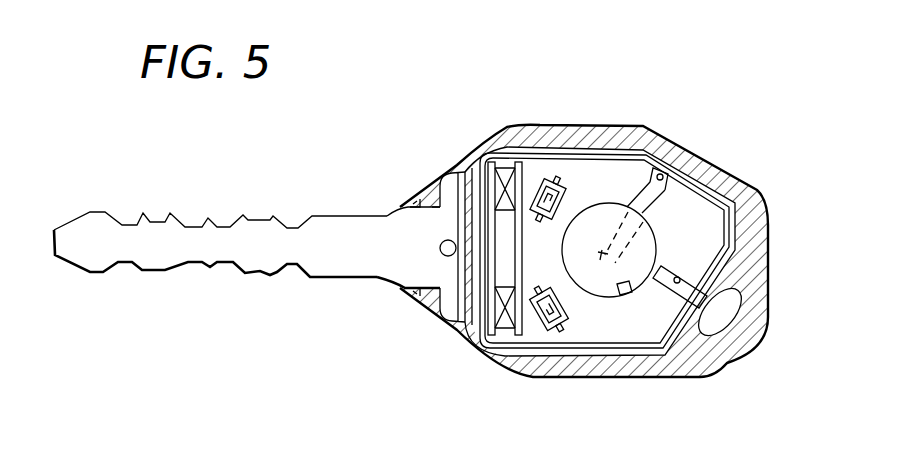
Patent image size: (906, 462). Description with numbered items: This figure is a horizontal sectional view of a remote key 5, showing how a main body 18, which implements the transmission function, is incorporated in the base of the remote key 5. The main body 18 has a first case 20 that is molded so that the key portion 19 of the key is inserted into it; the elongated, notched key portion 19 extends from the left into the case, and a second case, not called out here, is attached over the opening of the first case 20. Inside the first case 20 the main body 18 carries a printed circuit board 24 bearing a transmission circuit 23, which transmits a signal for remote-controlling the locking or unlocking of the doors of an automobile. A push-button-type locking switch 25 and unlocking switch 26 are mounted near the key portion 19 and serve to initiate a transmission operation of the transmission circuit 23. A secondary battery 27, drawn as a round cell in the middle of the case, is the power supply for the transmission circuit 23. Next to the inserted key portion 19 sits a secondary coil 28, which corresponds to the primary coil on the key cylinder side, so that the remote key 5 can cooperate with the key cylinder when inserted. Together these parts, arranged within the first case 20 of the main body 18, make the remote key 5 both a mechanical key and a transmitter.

The remote key 5 is at (447, 337).
The main body 18 is at (736, 160).
The key portion 19 is at (243, 215).
The first case 20 is at (664, 131).
The transmission circuit 23 is at (607, 175).
The printed circuit board 24 is at (705, 231).
The locking switch 25 is at (538, 178).
The unlocking switch 26 is at (545, 340).
The secondary battery 27 is at (600, 298).
The secondary coil 28 is at (503, 172).